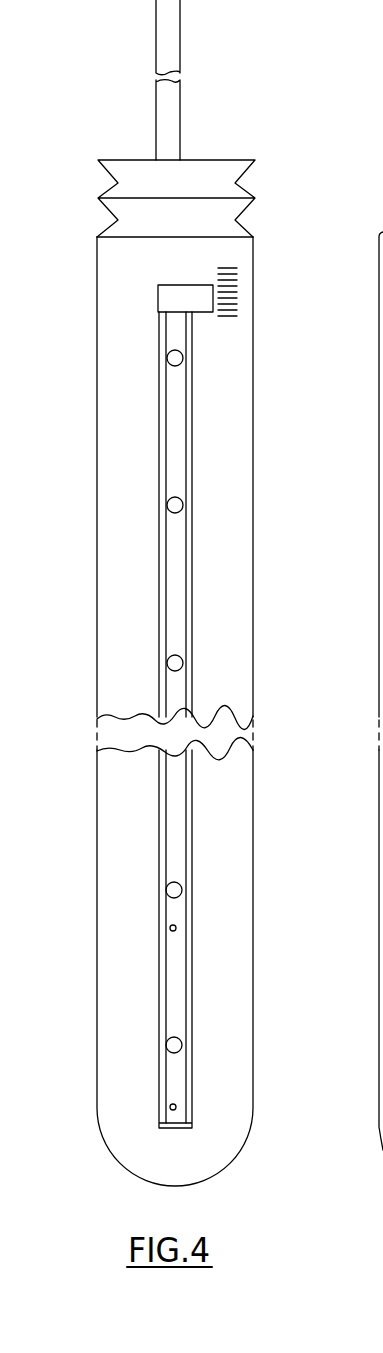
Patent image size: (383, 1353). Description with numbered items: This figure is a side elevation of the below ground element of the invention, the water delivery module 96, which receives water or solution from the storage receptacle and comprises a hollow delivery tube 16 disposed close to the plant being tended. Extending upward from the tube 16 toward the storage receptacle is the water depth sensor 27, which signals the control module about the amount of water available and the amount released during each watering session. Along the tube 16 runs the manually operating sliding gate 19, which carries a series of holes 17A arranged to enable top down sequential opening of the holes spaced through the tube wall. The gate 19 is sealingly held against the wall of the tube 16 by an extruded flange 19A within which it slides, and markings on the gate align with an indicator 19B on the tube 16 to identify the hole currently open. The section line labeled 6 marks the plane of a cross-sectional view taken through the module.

The water depth sensor 27 is at (168, 46).
The hollow delivery tube 16 is at (220, 146).
The section line 6- 6 is at (83, 222).
The water delivery module 96 is at (270, 883).
The manually operating sliding gate 19 is at (238, 706).
The extruded flange 19A is at (190, 548).
The indicator 19B is at (238, 322).
The holes 17A is at (183, 358).